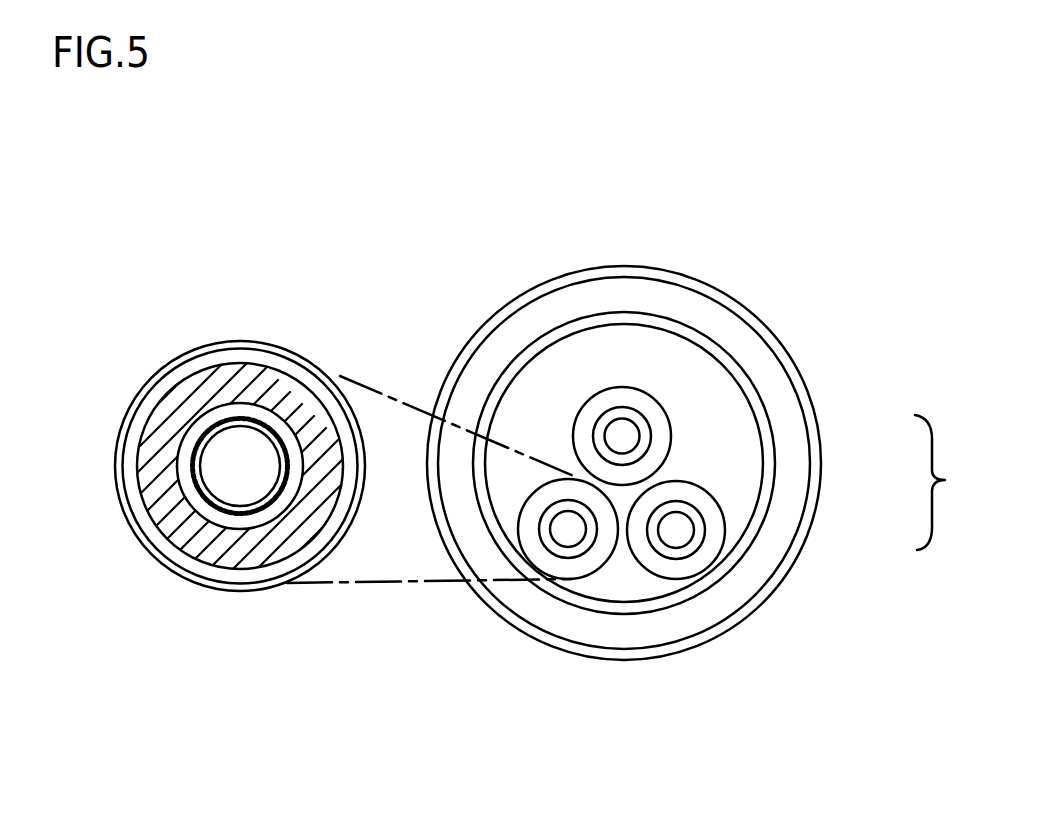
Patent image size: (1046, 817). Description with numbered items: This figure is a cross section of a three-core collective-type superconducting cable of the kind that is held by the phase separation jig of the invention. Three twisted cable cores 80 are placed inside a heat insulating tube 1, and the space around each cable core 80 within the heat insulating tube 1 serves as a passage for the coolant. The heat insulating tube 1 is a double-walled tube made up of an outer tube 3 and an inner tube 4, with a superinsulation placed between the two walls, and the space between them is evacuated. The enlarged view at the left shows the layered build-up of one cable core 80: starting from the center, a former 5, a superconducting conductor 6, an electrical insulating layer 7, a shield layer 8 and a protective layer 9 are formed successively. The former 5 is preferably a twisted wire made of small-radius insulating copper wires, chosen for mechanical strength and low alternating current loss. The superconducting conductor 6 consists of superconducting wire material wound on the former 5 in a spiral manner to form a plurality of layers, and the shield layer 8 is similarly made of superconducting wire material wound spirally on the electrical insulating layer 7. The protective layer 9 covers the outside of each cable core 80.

The heat insulating tube 1 is at (698, 463).
The outer tube 3 is at (820, 515).
The inner tube 4 is at (772, 450).
The former 5 is at (203, 428).
The superconducting conductor 6 is at (185, 455).
The electrical insulating layer 7 is at (163, 503).
The shield layer 8 is at (183, 558).
The protective layer 9 is at (238, 583).
The cable core 80 is at (643, 568).